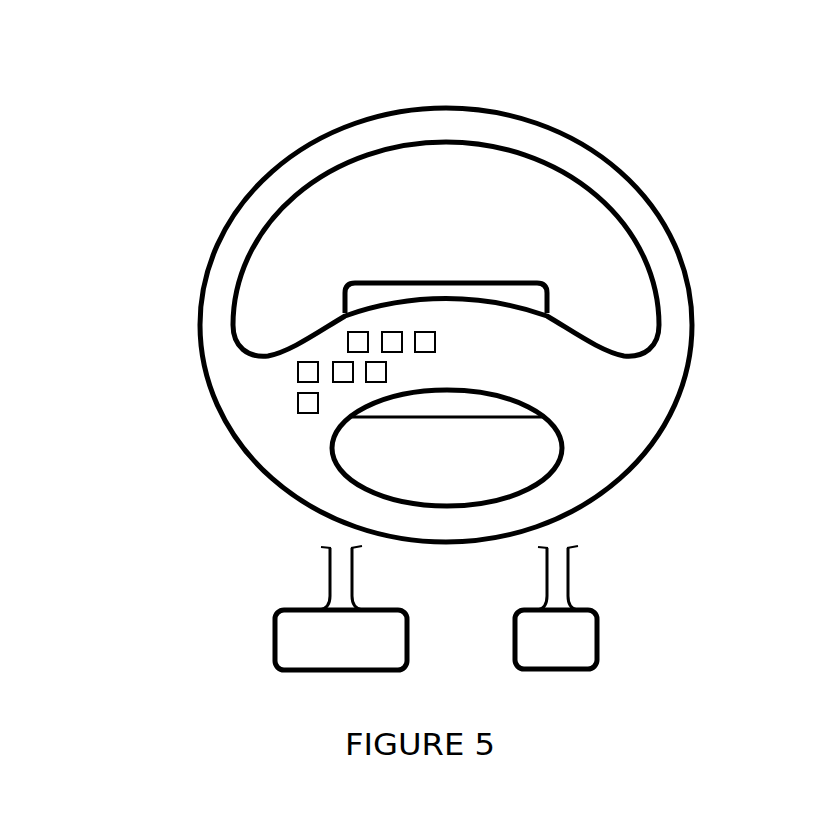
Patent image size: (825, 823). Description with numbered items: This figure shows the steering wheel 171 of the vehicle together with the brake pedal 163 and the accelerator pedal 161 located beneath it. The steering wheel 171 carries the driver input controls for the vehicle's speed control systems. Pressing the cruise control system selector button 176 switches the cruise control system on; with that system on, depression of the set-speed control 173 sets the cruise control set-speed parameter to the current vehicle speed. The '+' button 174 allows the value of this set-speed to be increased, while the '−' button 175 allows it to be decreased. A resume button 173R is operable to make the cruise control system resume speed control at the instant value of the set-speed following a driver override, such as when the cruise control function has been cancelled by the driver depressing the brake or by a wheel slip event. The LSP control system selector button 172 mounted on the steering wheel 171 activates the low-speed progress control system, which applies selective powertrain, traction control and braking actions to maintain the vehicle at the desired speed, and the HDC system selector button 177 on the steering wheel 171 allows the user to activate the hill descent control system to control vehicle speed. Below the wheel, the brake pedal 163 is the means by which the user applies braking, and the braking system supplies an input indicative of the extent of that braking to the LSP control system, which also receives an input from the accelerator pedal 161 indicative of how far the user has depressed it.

The steering wheel 171 is at (668, 280).
The LSP control system selector button 172 is at (360, 332).
The set-speed control 173 is at (336, 362).
The resume button 173R is at (375, 382).
The '+' button 174 is at (298, 372).
The '−' button 175 is at (298, 403).
The cruise control system selector button 176 is at (396, 332).
The HDC system selector button 177 is at (425, 332).
The accelerator pedal 161 is at (582, 633).
The brake pedal 163 is at (287, 635).